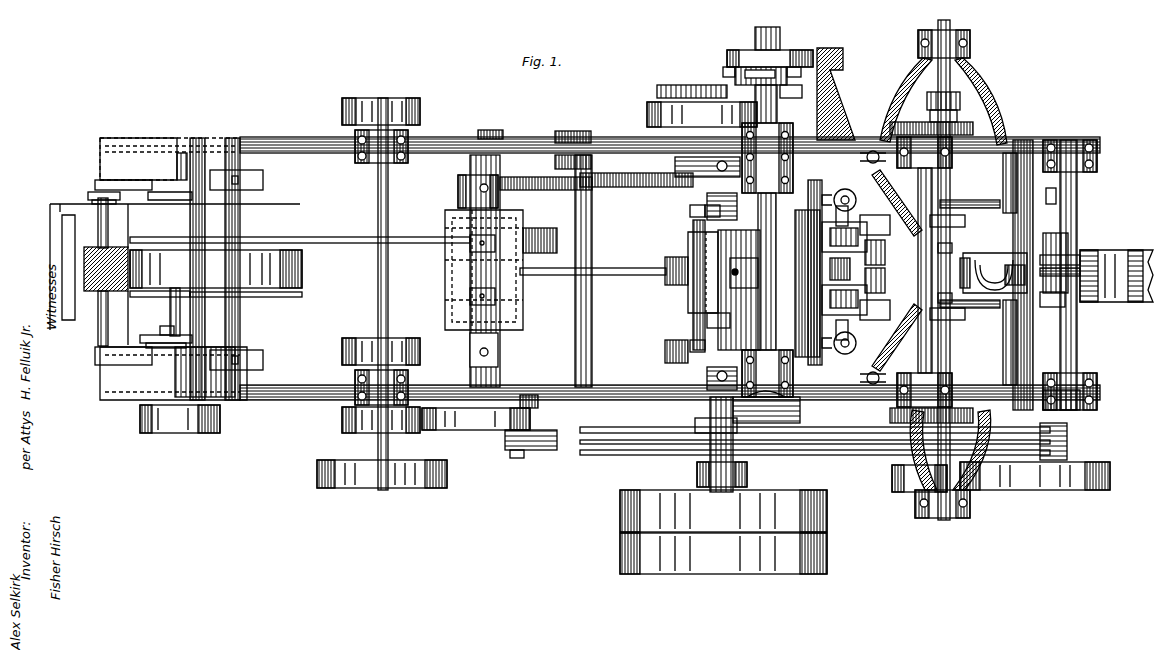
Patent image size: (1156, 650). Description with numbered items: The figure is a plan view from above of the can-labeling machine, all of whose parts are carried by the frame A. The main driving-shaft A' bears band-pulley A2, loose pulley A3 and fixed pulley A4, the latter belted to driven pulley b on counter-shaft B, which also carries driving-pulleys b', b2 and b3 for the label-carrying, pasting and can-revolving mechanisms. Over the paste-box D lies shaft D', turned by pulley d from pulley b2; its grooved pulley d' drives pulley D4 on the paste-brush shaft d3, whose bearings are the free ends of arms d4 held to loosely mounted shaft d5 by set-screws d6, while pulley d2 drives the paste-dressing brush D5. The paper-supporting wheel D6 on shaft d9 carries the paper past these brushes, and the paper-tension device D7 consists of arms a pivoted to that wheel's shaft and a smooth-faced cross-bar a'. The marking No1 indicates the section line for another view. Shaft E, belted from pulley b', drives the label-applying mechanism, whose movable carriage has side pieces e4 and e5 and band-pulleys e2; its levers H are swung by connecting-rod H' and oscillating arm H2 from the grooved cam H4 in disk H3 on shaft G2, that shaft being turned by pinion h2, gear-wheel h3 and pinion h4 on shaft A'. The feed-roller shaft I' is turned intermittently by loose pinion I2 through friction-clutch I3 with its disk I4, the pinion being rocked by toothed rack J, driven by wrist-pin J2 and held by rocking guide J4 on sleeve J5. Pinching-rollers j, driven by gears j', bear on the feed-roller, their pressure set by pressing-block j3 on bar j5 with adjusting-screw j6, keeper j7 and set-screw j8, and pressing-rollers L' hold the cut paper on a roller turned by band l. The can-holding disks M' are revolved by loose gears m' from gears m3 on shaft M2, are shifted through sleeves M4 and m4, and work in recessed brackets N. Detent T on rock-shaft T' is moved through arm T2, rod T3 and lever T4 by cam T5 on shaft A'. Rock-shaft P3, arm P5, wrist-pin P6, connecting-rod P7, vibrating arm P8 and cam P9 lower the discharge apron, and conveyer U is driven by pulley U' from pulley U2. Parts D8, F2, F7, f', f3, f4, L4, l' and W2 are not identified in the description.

The frame A is at (670, 262).
The main driving-shaft A' is at (766, 433).
The band-pulley A2 is at (723, 511).
The loose pulley A3 is at (723, 553).
The fixed pulley A4 is at (647, 110).
The arms a is at (300, 260).
The cross-bar a' is at (423, 293).
The counter-shaft B is at (388, 318).
The driven pulley b is at (381, 130).
The driving-pulley b' is at (381, 371).
The driving-pulley b2 is at (381, 420).
The driving-pulley b3 is at (382, 474).
The paste-box D is at (80, 276).
The shaft D' is at (175, 444).
The pulley D4 is at (165, 345).
The paste-dressing brush D5 is at (84, 258).
The paper-supporting wheel D6 is at (216, 269).
The paper-tension device D7 is at (420, 248).
The block D8 is at (468, 292).
The section line No1 is at (84, 272).
The pulley d is at (180, 419).
The grooved pulley d' is at (157, 337).
The pulley d2 is at (150, 192).
The paste-brush shaft d3 is at (170, 302).
The arms d4 is at (240, 178).
The loosely-mounted shaft d5 is at (88, 196).
The set-screw d6 is at (240, 186).
The shaft d9 is at (208, 269).
The shaft E is at (861, 267).
The band-pulleys e2 is at (882, 258).
The side pieces e4 is at (955, 222).
The side pieces e5 is at (952, 330).
The bar F2 is at (1060, 256).
The bolt F7 is at (872, 150).
The post f' is at (1078, 279).
The pin f3 is at (1051, 187).
The bar f4 is at (975, 200).
The cam-shaft G2 is at (492, 130).
The levers H is at (854, 273).
The connecting-rod H' is at (593, 261).
The oscillating arm H2 is at (448, 267).
The circular disk H3 is at (540, 230).
The grooved cam H4 is at (610, 271).
The pinion h2 is at (458, 182).
The gear-wheel h3 is at (546, 175).
The pinion h4 is at (682, 207).
The feed-roller shaft I' is at (794, 90).
The loose gear-pinion I2 is at (787, 80).
The friction-clutch I3 is at (727, 52).
The clutch disk I4 is at (755, 40).
The toothed rack J is at (735, 78).
The wrist-pin J2 is at (657, 90).
The rocking guide J4 is at (723, 70).
The sleeve J5 is at (777, 104).
The pinching-rollers j is at (739, 290).
The gears j' is at (698, 208).
The pressing-block j3 is at (718, 248).
The horizontal bar j5 is at (738, 285).
The adjusting-screw j6 is at (735, 278).
The keeper j7 is at (740, 300).
The set-screw j8 is at (733, 272).
The pressing-rollers L' is at (671, 277).
The bearing L4 is at (678, 351).
The band l is at (683, 327).
The block l' is at (672, 390).
The can-holding disks M' is at (918, 270).
The shaft M2 is at (924, 272).
The adjustable sleeves M4 is at (960, 102).
The loose gears m' is at (958, 291).
The gears m3 is at (876, 175).
The shifting-sleeve m4 is at (970, 90).
The brackets N is at (1050, 228).
The rock-shaft P3 is at (1077, 340).
The arm P5 is at (1080, 432).
The wrist-pin P6 is at (1067, 445).
The connecting-rod P7 is at (620, 445).
The vibrating arm P8 is at (533, 450).
The cam P9 is at (476, 419).
The detent T is at (1080, 202).
The rock-shaft T' is at (1081, 385).
The arm T2 is at (1060, 440).
The rod T3 is at (1030, 470).
The lever T4 is at (840, 445).
The cam T5 is at (695, 426).
The conveyer U is at (1116, 276).
The pulley U' is at (1035, 476).
The pulley U2 is at (722, 444).
The wheel W2 is at (849, 269).